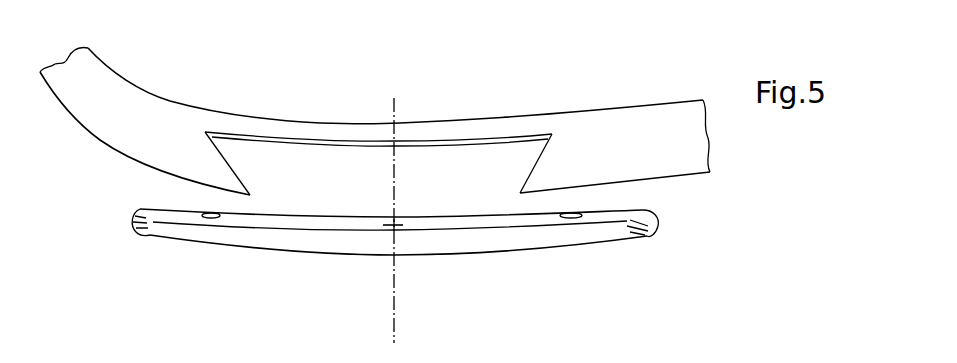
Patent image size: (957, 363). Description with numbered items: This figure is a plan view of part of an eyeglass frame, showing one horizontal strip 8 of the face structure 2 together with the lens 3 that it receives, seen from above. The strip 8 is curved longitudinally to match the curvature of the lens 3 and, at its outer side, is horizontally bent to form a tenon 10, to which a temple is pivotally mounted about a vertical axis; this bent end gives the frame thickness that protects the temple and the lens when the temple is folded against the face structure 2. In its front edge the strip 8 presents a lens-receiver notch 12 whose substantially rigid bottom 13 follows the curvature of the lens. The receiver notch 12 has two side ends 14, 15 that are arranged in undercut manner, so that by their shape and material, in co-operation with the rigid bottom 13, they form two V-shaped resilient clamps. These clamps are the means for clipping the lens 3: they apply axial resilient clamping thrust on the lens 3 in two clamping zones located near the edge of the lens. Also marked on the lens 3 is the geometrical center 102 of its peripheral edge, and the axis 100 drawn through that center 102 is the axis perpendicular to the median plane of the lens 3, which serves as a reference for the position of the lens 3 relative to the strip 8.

The face structure 2 is at (174, 102).
The lens 3 is at (235, 238).
The strip 8 is at (617, 122).
The tenon 10 is at (73, 95).
The lens-receiver notch 12 is at (447, 200).
The bottom of the receiver notch 13 is at (362, 148).
The side end of the receiver notch 14 is at (250, 190).
The side end of the receiver notch 15 is at (533, 162).
The axis 100 is at (395, 104).
The geometrical center 102 is at (400, 228).